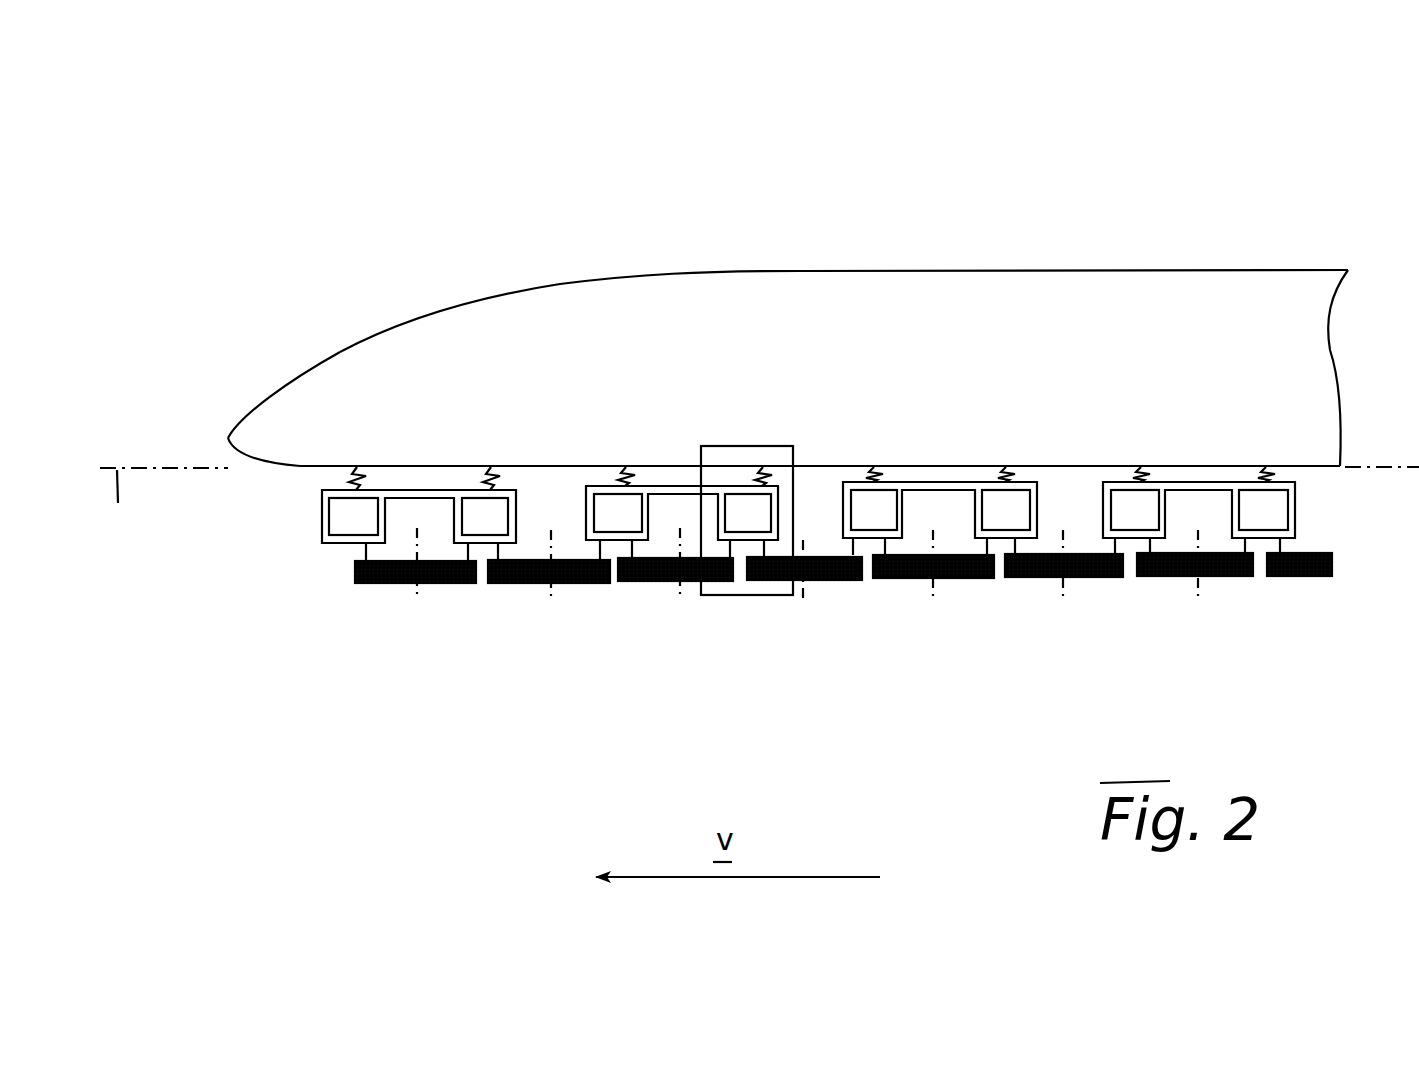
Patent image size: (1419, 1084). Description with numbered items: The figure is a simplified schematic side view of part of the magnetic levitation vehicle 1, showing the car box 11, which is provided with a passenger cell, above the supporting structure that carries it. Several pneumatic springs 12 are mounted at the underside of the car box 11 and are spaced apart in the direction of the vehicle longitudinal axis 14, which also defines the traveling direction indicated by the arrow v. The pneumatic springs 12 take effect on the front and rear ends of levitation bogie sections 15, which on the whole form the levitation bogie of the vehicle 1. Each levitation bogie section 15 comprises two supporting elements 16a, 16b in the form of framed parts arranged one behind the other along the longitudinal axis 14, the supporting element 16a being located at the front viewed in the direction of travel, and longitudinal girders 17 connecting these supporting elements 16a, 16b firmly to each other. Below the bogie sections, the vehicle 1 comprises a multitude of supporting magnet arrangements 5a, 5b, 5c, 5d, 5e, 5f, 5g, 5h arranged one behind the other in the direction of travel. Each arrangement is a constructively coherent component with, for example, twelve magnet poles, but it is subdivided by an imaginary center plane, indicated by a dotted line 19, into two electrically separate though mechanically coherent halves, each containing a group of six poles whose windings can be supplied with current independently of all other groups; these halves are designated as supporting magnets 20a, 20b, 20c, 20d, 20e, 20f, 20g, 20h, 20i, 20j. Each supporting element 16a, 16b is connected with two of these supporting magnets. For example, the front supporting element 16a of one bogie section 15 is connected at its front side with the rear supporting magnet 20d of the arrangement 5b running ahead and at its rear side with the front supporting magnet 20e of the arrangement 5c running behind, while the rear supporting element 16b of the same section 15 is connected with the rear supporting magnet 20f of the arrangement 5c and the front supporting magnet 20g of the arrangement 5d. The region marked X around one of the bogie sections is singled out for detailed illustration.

The vehicle 1 is at (1035, 249).
The car box 11 is at (427, 378).
The pneumatic springs 12 is at (1000, 470).
The vehicle longitudinal axis 14 is at (759, 517).
The levitation bogie section 15 is at (810, 392).
The front supporting element 16a is at (613, 513).
The rear supporting element 16b is at (743, 510).
The longitudinal girders 17 is at (1195, 478).
The dotted line 19 is at (553, 517).
The detail region X is at (753, 447).
The supporting magnet arrangement 5a is at (398, 588).
The supporting magnet arrangement 5b is at (562, 587).
The supporting magnet arrangement 5c is at (682, 586).
The supporting magnet arrangement 5d is at (833, 586).
The supporting magnet arrangement 5e is at (966, 584).
The supporting magnet arrangement 5f is at (1075, 583).
The supporting magnet arrangement 5g is at (1215, 582).
The supporting magnet arrangement 5h is at (1311, 582).
The supporting magnet 20a is at (375, 585).
The supporting magnet 20b is at (445, 583).
The supporting magnet 20c is at (505, 583).
The rear supporting magnet 20d is at (579, 583).
The front side supporting magnet 20e is at (647, 582).
The rear side supporting magnet 20f is at (723, 581).
The front side supporting magnet 20g is at (772, 581).
The supporting magnet 20h is at (816, 581).
The supporting magnet 20i is at (893, 580).
The supporting magnet 20j is at (947, 580).